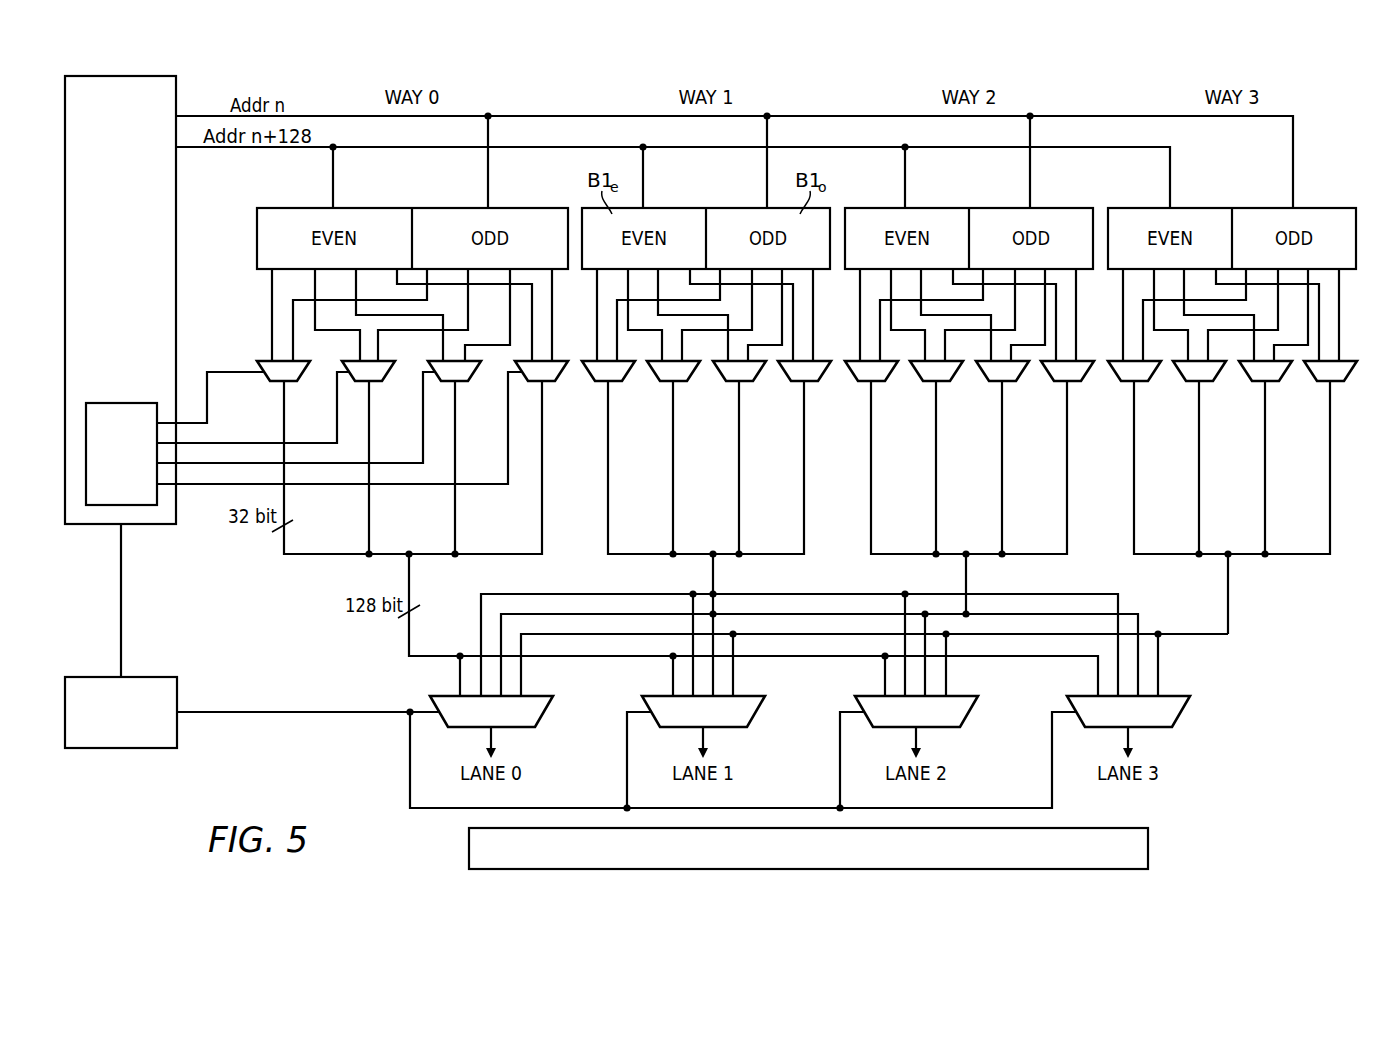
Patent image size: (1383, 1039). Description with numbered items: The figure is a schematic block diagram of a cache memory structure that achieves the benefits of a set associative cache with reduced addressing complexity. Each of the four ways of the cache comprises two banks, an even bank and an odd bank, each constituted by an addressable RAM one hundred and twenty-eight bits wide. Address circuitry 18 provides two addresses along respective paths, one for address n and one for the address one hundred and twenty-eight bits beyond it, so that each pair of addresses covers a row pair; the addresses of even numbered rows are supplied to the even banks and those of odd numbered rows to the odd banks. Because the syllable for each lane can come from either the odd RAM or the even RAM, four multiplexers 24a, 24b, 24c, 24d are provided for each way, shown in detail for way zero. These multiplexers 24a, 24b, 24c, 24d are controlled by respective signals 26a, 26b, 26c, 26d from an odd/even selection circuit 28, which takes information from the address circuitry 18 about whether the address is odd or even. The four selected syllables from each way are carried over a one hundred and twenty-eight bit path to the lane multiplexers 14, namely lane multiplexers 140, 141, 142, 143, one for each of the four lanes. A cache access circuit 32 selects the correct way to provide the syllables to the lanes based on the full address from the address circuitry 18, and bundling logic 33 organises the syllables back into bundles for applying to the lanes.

The address circuitry 18 is at (107, 310).
The odd/even selection circuit 28 is at (109, 465).
The multiplexer 24a is at (290, 383).
The multiplexer 24b is at (376, 383).
The multiplexer 24c is at (462, 383).
The multiplexer 24d is at (549, 383).
The control signal 26a is at (249, 370).
The control signal 26b is at (258, 442).
The control signal 26c is at (337, 465).
The control signal 26d is at (408, 485).
The lane multiplexers 14 is at (837, 722).
The lane multiplexer 140 is at (543, 712).
The lane multiplexer 141 is at (755, 712).
The lane multiplexer 142 is at (968, 712).
The lane multiplexer 143 is at (1180, 712).
The cache access circuit 32 is at (117, 750).
The bundling logic 33 is at (1148, 855).